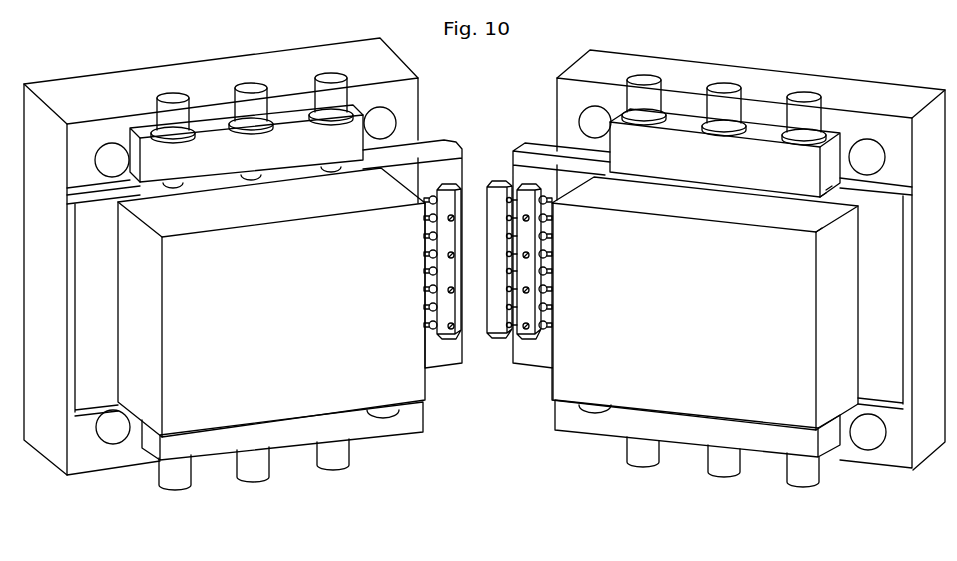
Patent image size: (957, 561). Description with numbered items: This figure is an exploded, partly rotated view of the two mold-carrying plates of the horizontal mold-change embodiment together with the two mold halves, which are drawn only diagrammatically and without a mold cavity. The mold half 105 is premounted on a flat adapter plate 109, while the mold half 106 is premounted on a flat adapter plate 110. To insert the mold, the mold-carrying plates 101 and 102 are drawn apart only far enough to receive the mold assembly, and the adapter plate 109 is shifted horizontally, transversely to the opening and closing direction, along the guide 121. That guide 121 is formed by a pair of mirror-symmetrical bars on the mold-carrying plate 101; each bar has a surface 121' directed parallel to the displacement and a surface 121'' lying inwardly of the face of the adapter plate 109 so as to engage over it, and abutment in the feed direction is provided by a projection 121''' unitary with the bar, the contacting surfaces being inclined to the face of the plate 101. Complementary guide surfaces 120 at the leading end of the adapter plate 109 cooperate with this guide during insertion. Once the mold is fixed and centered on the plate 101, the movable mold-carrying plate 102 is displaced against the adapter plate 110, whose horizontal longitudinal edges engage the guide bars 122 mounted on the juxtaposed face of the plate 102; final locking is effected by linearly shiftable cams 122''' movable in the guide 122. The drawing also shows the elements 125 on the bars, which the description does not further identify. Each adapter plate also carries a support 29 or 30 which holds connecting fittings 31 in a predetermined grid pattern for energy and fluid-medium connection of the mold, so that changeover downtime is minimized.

The mold-carrying plate 101 is at (928, 133).
The movable mold-carrying plate 102 is at (410, 108).
The mold half 105 is at (833, 363).
The mold half 106 is at (145, 383).
The adapter plate 109 is at (890, 363).
The adapter plate 110 is at (87, 357).
The guide surfaces 120 is at (527, 147).
The guide 121 is at (697, 270).
The bar surface 121' is at (859, 122).
The surface 121'' is at (794, 180).
The projection 121''' is at (836, 223).
The guide bars 122 is at (276, 266).
The cams 122''' is at (252, 194).
The locating pins 125 is at (174, 99).
The support 29 is at (527, 312).
The support 30 is at (450, 281).
The connecting fittings 31 is at (507, 254).